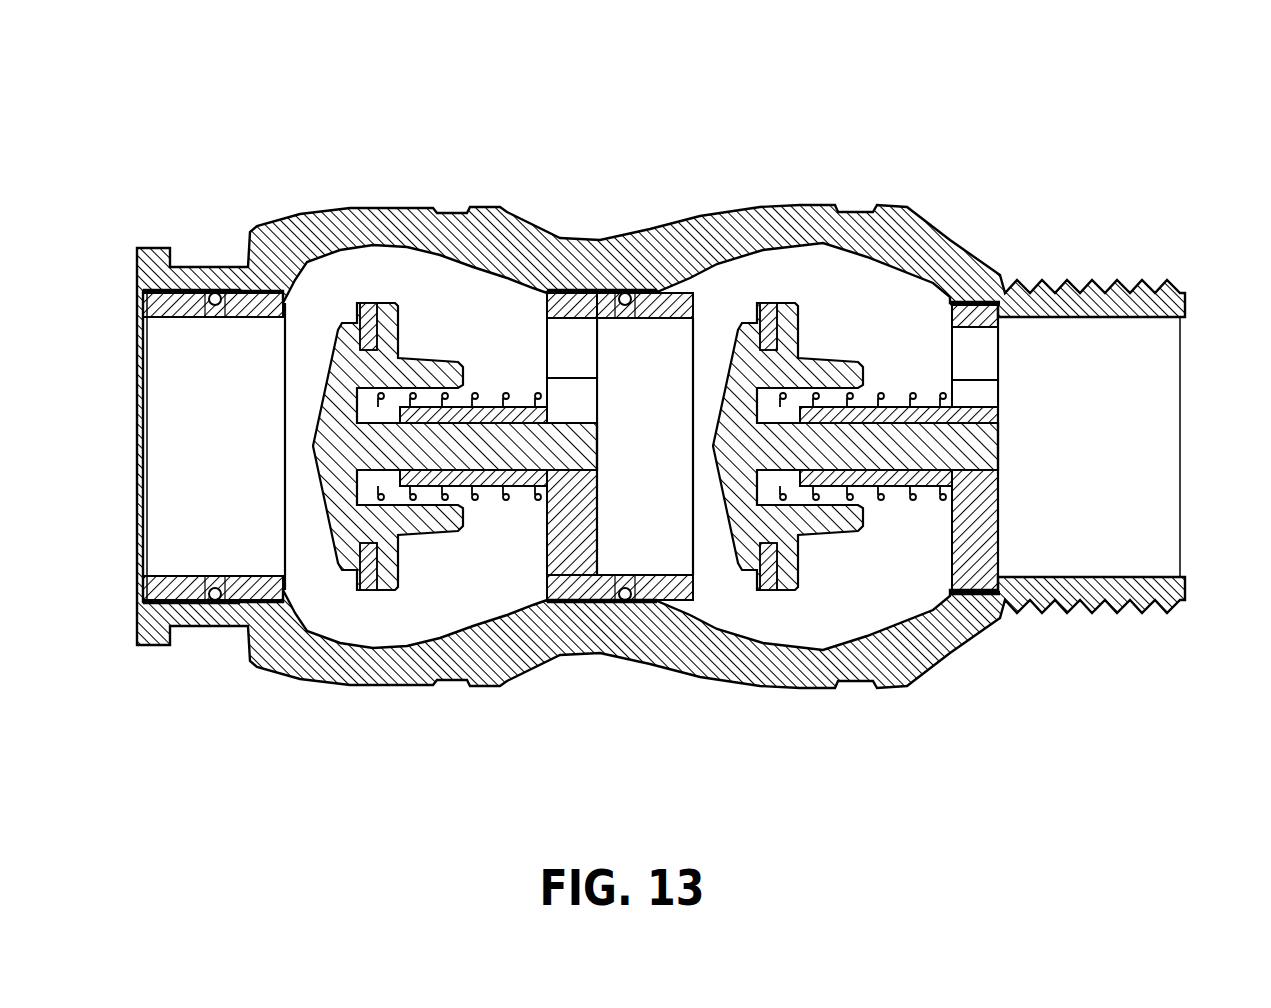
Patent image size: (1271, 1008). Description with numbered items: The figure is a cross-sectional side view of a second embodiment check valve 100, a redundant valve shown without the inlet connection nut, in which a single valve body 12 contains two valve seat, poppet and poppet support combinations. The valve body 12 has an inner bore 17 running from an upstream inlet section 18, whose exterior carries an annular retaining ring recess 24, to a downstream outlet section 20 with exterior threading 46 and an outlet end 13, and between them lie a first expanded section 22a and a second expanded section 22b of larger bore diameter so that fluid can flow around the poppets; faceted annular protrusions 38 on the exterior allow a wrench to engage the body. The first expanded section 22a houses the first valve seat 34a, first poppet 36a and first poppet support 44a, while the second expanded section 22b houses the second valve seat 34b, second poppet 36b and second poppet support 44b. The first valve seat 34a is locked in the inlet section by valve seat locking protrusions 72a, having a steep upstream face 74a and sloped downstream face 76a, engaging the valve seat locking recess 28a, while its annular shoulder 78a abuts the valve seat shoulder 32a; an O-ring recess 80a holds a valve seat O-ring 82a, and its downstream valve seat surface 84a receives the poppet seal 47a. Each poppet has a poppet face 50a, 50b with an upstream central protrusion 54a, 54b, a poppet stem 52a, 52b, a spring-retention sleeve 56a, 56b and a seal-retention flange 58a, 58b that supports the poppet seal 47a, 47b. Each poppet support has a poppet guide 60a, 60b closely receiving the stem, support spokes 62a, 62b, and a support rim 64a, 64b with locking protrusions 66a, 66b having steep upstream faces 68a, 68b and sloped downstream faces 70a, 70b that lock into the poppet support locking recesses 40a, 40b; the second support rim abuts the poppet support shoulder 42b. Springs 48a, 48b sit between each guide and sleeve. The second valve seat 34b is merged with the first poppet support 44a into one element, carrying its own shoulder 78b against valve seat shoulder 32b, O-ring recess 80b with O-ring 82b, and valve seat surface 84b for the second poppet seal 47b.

The second embodiment check valve 100 is at (992, 80).
The valve body 12 is at (915, 720).
The outlet end 13 is at (1190, 292).
The inner bore 17 is at (1160, 442).
The upstream inlet section 18 is at (220, 648).
The downstream outlet section 20 is at (1110, 632).
The first expanded section 22a is at (355, 713).
The second expanded section 22b is at (790, 705).
The annular retaining ring recess 24 is at (212, 262).
The first valve seat locking recess 28a is at (150, 247).
The first valve seat shoulder 32a is at (262, 244).
The second valve seat shoulder 32b is at (702, 312).
The first valve seat 34a is at (183, 265).
The second valve seat 34b is at (632, 300).
The first poppet 36a is at (397, 294).
The second poppet 36b is at (797, 292).
The faceted annular protrusions 38 is at (840, 208).
The first poppet support locking recess 40a is at (596, 303).
The second poppet support locking recess 40b is at (992, 306).
The second poppet support shoulder 42b is at (1040, 290).
The first poppet support 44a is at (610, 300).
The second poppet support 44b is at (1010, 300).
The exterior threading 46 is at (1120, 290).
The first poppet seal 47a is at (340, 300).
The second poppet seal 47b is at (768, 303).
The first spring 48a is at (440, 500).
The second spring 48b is at (910, 500).
The first poppet face 50a is at (340, 345).
The second poppet face 50b is at (738, 340).
The first poppet stem 52a is at (488, 470).
The second poppet stem 52b is at (970, 445).
The first central protrusion 54a is at (317, 458).
The second central protrusion 54b is at (722, 482).
The first spring-retention sleeve 56a is at (437, 363).
The second spring-retention sleeve 56b is at (845, 365).
The first seal-retention flange 58a is at (392, 322).
The second seal-retention flange 58b is at (800, 322).
The first poppet guide 60a is at (485, 405).
The second poppet guide 60b is at (895, 403).
The first support spokes 62a is at (573, 522).
The second support spokes 62b is at (980, 512).
The first support rim 64a is at (577, 305).
The second support rim 64b is at (972, 300).
The first poppet support locking protrusions 66a is at (595, 562).
The second poppet support locking protrusions 66b is at (985, 535).
The first steep upstream face 68a is at (545, 605).
The second steep upstream face 68b is at (950, 600).
The first sloped downstream face 70a is at (575, 607).
The second sloped downstream face 70b is at (990, 605).
The first valve seat locking protrusions 72a is at (145, 605).
The first steep upstream face 74a is at (125, 648).
The first sloped downstream face 76a is at (155, 630).
The first valve seat annular shoulder 78a is at (240, 318).
The second valve seat annular shoulder 78b is at (677, 320).
The first O-ring recess 80a is at (207, 310).
The second O-ring recess 80b is at (628, 318).
The first valve seat O-ring 82a is at (210, 318).
The second valve seat O-ring 82b is at (645, 318).
The first valve seat surface 84a is at (185, 300).
The second valve seat surface 84b is at (700, 292).